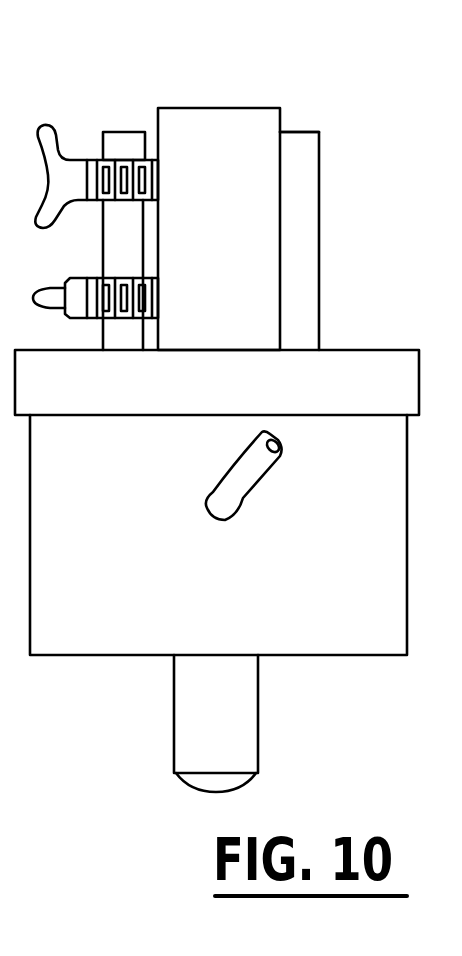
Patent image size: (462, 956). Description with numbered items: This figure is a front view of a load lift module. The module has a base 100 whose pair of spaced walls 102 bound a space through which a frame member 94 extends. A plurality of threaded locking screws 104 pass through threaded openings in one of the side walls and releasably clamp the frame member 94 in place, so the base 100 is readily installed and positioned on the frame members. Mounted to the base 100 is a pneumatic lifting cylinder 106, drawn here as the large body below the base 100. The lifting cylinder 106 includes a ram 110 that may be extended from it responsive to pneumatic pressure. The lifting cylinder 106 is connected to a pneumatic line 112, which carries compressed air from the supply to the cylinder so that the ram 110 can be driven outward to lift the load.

The frame member 94 is at (231, 107).
The base 100 is at (319, 276).
The spaced wall 102 is at (298, 130).
The threaded locking screw 104 is at (52, 138).
The pneumatic lifting cylinder 106 is at (240, 592).
The ram 110 is at (258, 707).
The pneumatic line 112 is at (253, 500).